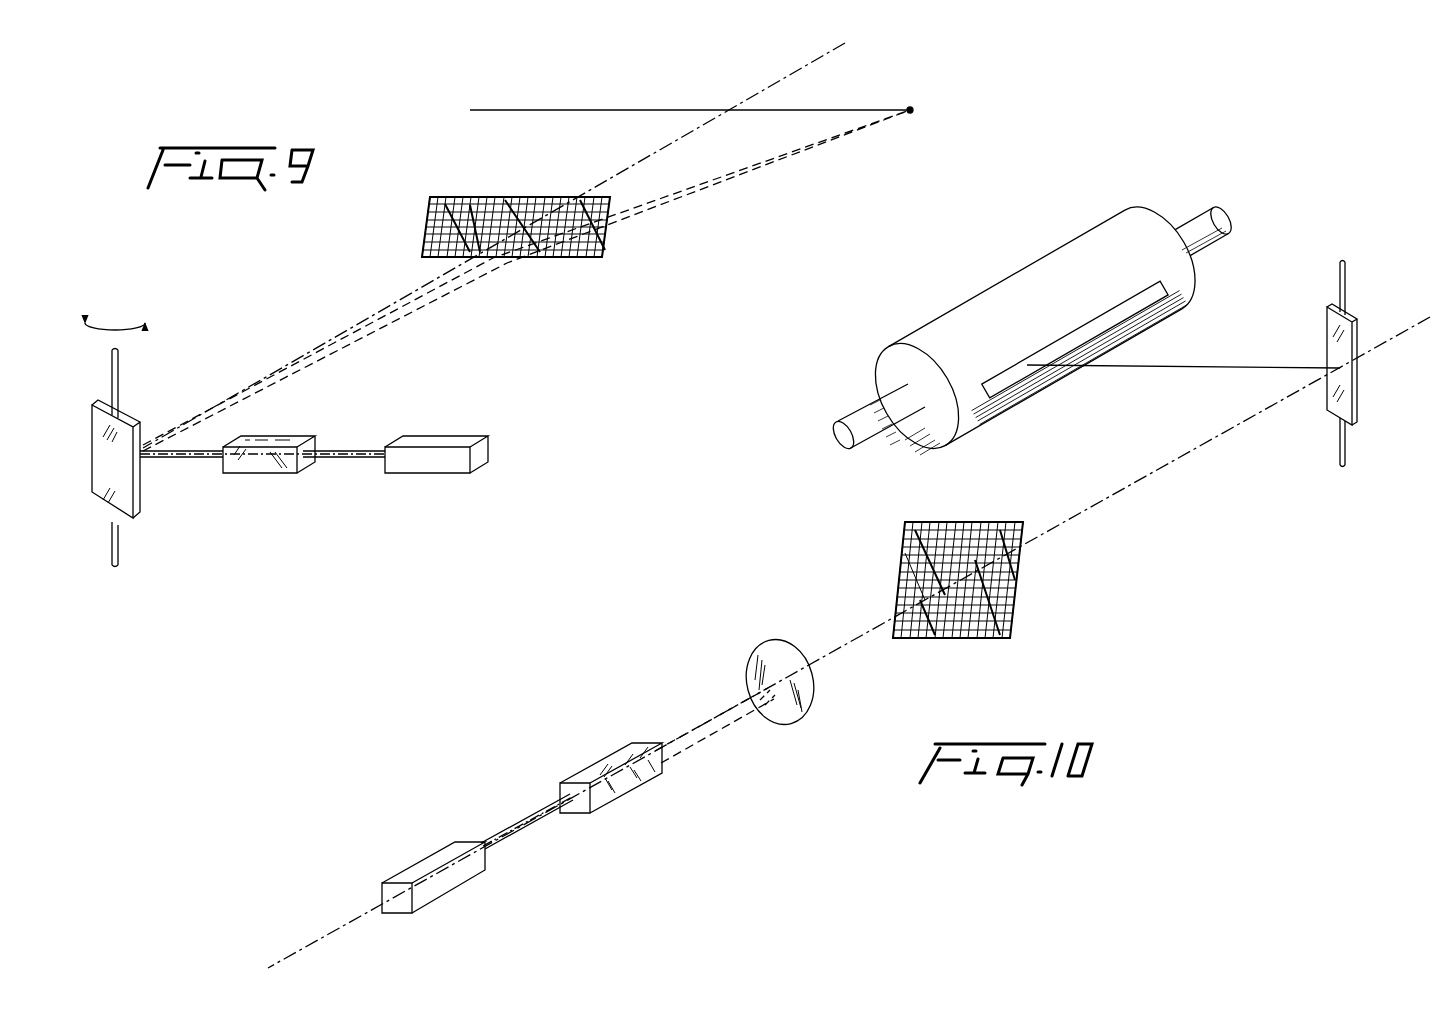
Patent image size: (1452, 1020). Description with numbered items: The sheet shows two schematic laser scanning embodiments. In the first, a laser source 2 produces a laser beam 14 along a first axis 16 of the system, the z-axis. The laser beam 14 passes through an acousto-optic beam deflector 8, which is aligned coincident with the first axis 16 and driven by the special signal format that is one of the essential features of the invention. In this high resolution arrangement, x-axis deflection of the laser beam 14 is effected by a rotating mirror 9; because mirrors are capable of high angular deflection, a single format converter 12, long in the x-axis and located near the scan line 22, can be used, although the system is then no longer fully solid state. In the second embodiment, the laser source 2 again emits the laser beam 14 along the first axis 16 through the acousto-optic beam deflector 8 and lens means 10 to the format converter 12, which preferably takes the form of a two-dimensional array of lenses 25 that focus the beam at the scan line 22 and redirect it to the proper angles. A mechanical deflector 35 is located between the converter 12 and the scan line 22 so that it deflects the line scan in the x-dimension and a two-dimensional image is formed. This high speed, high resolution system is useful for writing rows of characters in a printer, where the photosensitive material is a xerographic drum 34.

In FIG. 9, the laser source 2 is at (460, 466).
In FIG. 10, the laser source 2 is at (460, 880).
In FIG. 9, the acousto-optic beam deflector 8 is at (275, 462).
In FIG. 10, the acousto-optic beam deflector 8 is at (650, 775).
In FIG. 9, the rotating mirror 9 is at (105, 495).
In FIG. 10, the lens means 10 is at (755, 645).
In FIG. 9, the format converter 12 is at (605, 230).
In FIG. 10, the format converter 12 is at (1018, 618).
In FIG. 9, the laser beam 14 is at (350, 450).
In FIG. 10, the laser beam 14 is at (520, 818).
In FIG. 9, the first axis 16 is at (755, 100).
In FIG. 10, the first axis 16 is at (350, 922).
In FIG. 9, the scan line 22 is at (558, 110).
In FIG. 10, the scan line 22 is at (1027, 368).
In FIG. 10, the lens 25 is at (905, 553).
In FIG. 10, the xerographic drum 34 is at (1003, 292).
In FIG. 10, the mechanical deflector 35 is at (1352, 398).